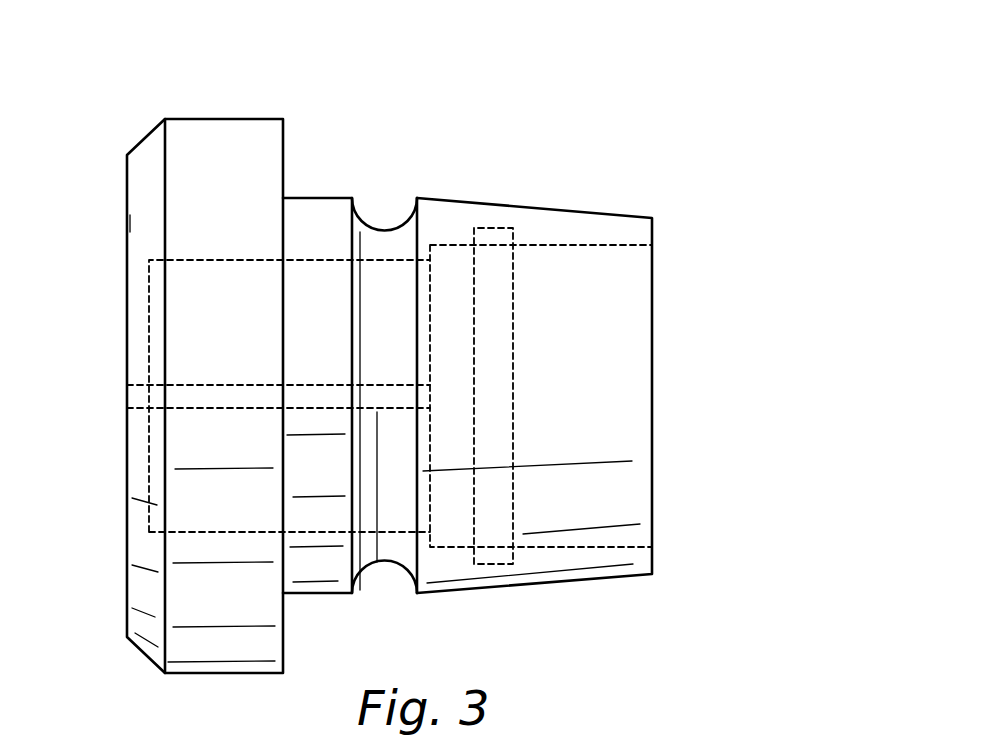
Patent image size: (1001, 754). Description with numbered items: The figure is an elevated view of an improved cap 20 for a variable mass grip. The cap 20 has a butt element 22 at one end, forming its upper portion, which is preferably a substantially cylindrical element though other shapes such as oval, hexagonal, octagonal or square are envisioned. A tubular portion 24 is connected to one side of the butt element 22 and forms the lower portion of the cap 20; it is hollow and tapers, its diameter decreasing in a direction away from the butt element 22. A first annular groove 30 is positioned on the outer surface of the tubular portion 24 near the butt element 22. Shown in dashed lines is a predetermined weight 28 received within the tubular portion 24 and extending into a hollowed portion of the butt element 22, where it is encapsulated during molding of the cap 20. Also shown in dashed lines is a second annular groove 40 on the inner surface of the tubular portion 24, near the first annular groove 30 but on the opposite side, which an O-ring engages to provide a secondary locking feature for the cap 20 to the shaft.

The cap 20 is at (558, 93).
The butt element 22 is at (239, 132).
The tubular portion 24 is at (553, 575).
The weight 28 is at (232, 332).
The first annular groove 30 is at (372, 228).
The second annular groove 40 is at (492, 228).